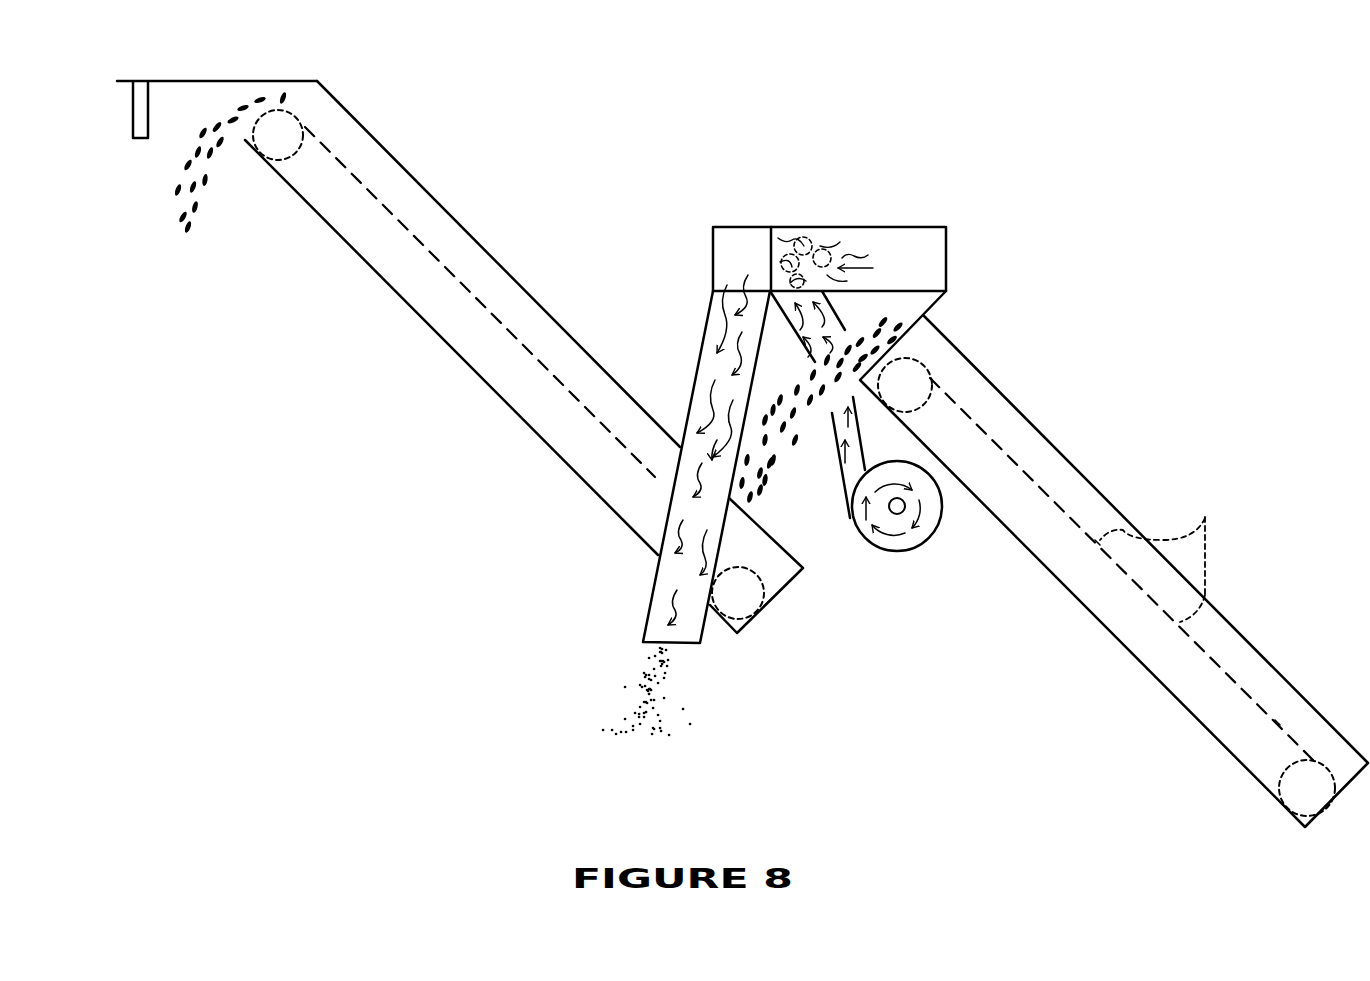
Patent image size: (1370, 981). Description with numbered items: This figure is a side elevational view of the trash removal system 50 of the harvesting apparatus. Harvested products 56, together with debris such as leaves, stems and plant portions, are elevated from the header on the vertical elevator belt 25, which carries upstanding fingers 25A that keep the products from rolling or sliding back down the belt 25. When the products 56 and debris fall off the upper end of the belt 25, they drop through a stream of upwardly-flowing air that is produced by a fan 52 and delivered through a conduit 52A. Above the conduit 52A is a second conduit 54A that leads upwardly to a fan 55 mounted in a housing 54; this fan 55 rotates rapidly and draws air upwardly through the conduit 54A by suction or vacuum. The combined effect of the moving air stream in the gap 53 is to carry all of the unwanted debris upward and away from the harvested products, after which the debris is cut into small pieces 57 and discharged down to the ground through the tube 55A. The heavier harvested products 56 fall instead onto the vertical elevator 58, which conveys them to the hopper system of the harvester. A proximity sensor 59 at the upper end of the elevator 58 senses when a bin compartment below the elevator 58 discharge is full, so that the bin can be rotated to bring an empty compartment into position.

The trash removal system 50 is at (720, 147).
The proximity sensor 59 is at (140, 110).
The vertical elevator 58 is at (546, 312).
The tube 55A is at (662, 592).
The small pieces 57 is at (657, 708).
The housing 54 is at (832, 226).
The fan 55 is at (802, 233).
The conduit 54A is at (834, 318).
The harvested products 56 is at (213, 160).
The vertical elevator belt 25 is at (1003, 433).
The upstanding fingers 25A is at (1176, 548).
The fan 52 is at (898, 552).
The conduit 52A is at (838, 440).
The gap 53 is at (837, 395).